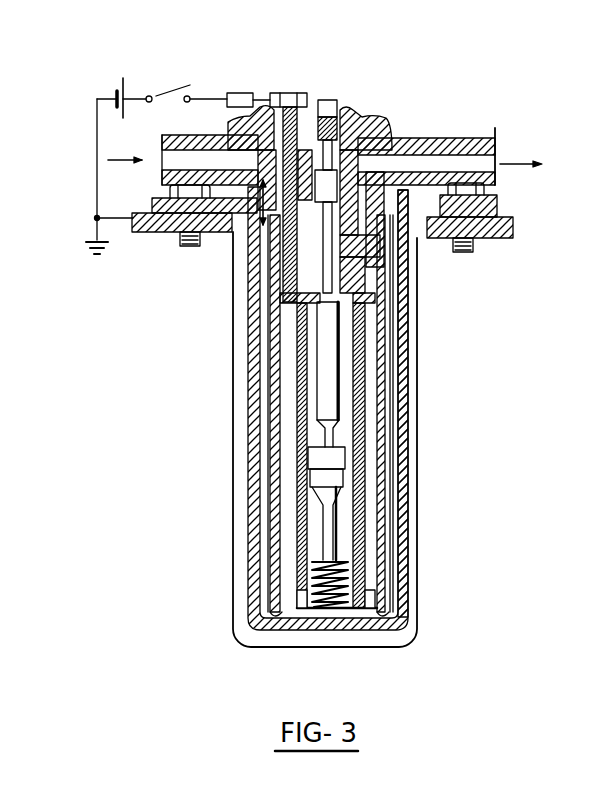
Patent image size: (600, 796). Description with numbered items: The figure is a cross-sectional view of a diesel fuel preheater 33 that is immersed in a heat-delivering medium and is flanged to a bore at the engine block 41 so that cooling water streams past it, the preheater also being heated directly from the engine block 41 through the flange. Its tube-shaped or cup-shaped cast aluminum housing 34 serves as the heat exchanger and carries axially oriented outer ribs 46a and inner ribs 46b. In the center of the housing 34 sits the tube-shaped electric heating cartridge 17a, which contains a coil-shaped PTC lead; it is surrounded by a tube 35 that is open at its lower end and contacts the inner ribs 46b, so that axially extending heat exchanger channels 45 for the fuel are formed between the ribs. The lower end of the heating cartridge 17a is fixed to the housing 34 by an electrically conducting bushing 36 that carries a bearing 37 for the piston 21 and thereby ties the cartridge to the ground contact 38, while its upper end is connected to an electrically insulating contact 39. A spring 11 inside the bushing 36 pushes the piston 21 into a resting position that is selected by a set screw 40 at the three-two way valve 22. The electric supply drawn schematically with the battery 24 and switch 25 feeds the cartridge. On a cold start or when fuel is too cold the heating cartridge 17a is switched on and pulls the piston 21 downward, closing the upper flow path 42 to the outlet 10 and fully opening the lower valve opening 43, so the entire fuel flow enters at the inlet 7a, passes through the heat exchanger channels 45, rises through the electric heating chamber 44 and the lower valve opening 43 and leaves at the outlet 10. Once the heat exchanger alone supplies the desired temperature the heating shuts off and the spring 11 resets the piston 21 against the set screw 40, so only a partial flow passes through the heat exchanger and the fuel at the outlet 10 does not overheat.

The battery 24 is at (113, 92).
The switch 25 is at (172, 88).
The inlet 7a is at (126, 149).
The diesel fuel preheater 33 is at (440, 124).
The outlet 10 is at (521, 150).
The 3/2 way valve 22 is at (385, 121).
The electrically insulating contact 39 is at (291, 92).
The set screw 40 is at (334, 100).
The ground contact 38 is at (140, 234).
The engine block 41 is at (498, 242).
The housing 34 is at (246, 616).
The tube 35 is at (252, 549).
The electrically conducting bushing 36 is at (275, 510).
The electric heating chamber 44 is at (388, 372).
The heat exchanger channels 45 is at (392, 430).
The outer ribs 46a is at (408, 477).
The inner ribs 46b is at (390, 534).
The lower valve opening 43 is at (367, 284).
The upper flow path 42 is at (352, 215).
The electric heating cartridge 17a is at (298, 357).
The piston 21 is at (318, 401).
The bearing 37 is at (308, 462).
The spring 11 is at (350, 578).